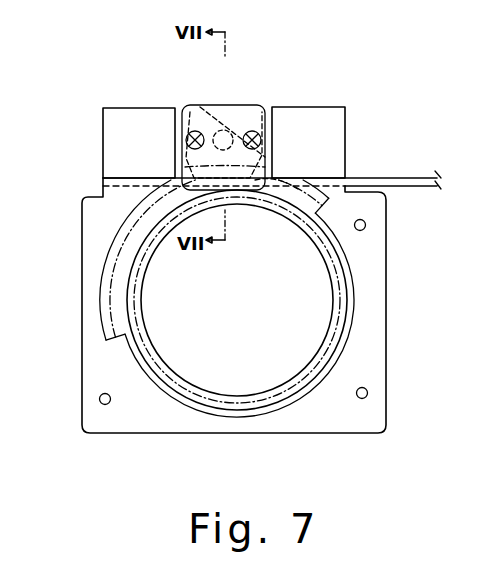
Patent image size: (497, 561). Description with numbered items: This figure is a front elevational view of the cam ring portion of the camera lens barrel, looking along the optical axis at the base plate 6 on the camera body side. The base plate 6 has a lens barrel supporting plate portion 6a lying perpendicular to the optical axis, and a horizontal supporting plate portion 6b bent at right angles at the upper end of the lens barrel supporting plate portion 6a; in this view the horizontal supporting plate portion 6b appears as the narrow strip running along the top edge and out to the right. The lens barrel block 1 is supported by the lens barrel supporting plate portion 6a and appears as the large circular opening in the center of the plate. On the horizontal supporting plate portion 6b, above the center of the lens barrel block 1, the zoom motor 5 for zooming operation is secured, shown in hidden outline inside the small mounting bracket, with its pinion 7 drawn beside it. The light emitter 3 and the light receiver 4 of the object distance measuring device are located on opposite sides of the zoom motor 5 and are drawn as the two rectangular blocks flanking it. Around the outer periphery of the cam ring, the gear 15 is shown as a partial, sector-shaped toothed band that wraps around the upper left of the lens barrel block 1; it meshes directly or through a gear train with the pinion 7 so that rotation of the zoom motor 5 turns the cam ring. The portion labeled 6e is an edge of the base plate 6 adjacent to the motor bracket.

The lens barrel block 1 is at (296, 388).
The light emitter 3 is at (337, 108).
The light receiver 4 is at (140, 108).
The zoom motor 5 is at (229, 128).
The base plate 6 is at (370, 342).
The lens barrel supporting plate portion 6a is at (364, 265).
The horizontal supporting plate portion 6b is at (343, 180).
The hidden edge of flange 6e is at (193, 110).
The pinion 7 is at (263, 110).
The gear 15 is at (118, 263).